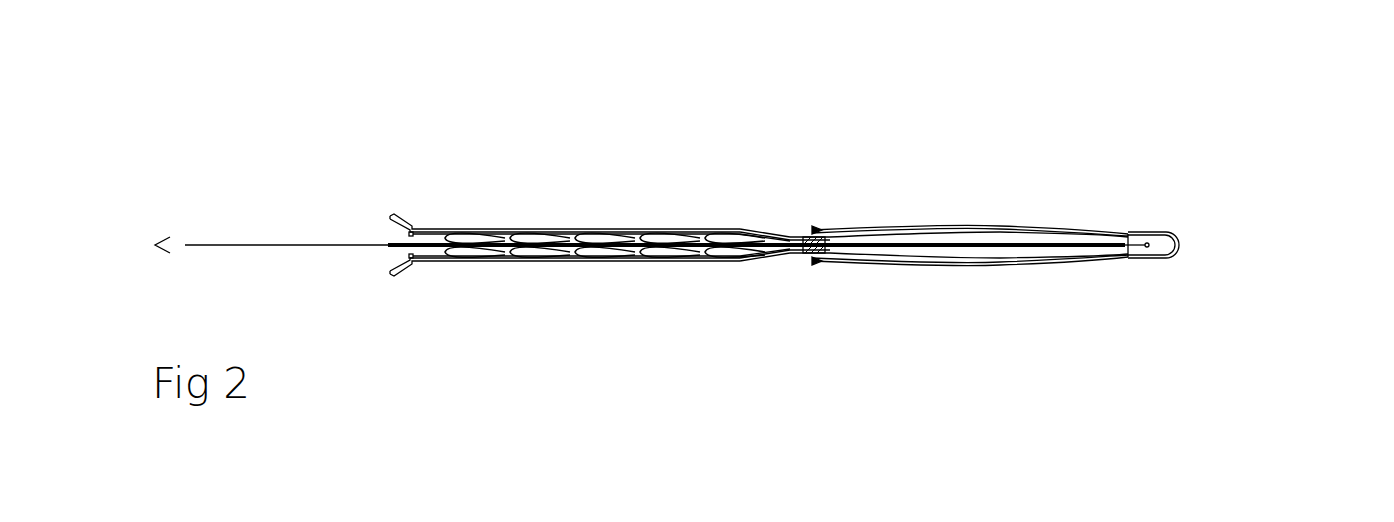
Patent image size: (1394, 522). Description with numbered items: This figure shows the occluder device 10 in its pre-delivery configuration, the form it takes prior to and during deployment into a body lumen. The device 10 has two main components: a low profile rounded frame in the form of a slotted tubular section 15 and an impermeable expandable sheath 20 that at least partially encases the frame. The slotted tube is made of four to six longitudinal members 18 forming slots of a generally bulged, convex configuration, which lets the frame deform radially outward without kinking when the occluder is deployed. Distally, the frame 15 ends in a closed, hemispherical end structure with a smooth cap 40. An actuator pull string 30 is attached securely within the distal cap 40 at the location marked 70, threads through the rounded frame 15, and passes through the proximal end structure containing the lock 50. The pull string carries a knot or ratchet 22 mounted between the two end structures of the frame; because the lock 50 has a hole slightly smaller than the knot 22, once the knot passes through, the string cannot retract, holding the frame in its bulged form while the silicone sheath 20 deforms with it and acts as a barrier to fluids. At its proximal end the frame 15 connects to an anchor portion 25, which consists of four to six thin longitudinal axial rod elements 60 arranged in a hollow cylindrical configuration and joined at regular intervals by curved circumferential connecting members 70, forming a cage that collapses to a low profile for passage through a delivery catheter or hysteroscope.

The device 10 is at (788, 396).
The slotted tubular section 15 is at (988, 285).
The longitudinal members 18 is at (1053, 207).
The expandable sheath 20 is at (993, 228).
The knot 22 is at (968, 245).
The anchor portion 25 is at (609, 281).
The actuator pull string 30 is at (370, 238).
The cap 40 is at (1182, 246).
The lock 50 is at (805, 234).
The longitudinal axial rod elements 60 is at (598, 169).
The circumferential connecting members 70 is at (1262, 150).